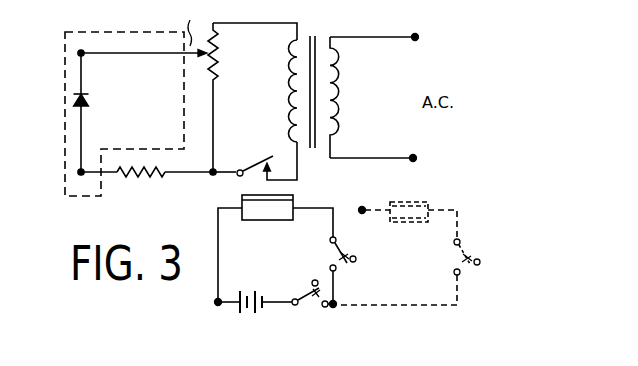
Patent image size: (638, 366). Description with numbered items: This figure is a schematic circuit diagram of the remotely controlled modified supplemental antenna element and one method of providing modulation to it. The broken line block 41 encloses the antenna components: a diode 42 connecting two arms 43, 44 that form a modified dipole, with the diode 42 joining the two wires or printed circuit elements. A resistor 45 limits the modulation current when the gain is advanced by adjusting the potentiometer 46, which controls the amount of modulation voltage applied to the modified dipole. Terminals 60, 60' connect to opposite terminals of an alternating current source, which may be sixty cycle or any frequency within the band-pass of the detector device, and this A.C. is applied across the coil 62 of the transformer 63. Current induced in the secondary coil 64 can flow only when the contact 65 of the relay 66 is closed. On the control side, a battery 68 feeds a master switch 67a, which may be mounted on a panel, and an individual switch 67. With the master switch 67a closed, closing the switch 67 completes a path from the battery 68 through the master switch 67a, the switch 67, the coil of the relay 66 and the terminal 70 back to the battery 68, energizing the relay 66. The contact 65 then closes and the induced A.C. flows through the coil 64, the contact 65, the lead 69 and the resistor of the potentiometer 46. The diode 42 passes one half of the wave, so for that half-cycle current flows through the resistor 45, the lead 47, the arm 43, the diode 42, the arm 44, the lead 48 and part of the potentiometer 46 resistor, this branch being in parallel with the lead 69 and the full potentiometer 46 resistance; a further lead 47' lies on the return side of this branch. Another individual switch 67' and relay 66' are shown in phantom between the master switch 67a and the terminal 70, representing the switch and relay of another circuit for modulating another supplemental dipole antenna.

The broken line block 41 is at (62, 124).
The diode 42 is at (89, 101).
The arm 43 is at (81, 147).
The arm 44 is at (82, 70).
The resistor 45 is at (156, 175).
The potentiometer 46 is at (219, 56).
The lead 47 is at (101, 186).
The lead 47' is at (190, 186).
The lead 48 is at (199, 23).
The terminal 60 is at (389, 41).
The terminal 60' is at (392, 157).
The coil 62 is at (338, 96).
The transformer 63 is at (328, 24).
The secondary coil 64 is at (288, 86).
The contact 65 is at (277, 169).
The relay 66 is at (285, 200).
The relay 66' is at (412, 203).
The switch 67 is at (324, 256).
The individual switch 67' is at (418, 257).
The master switch 67a is at (306, 303).
The battery 68 is at (259, 302).
The lead 69 is at (215, 149).
The terminal 70 is at (215, 302).